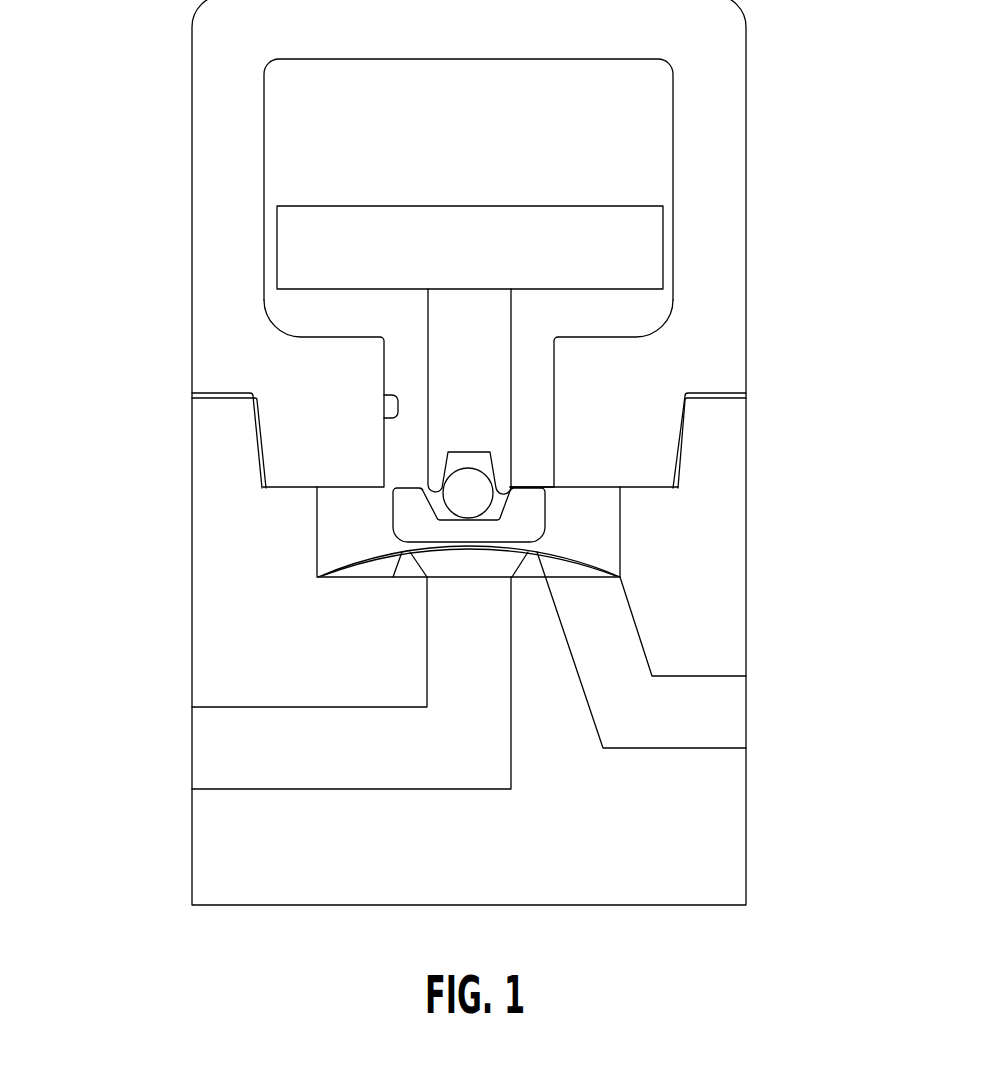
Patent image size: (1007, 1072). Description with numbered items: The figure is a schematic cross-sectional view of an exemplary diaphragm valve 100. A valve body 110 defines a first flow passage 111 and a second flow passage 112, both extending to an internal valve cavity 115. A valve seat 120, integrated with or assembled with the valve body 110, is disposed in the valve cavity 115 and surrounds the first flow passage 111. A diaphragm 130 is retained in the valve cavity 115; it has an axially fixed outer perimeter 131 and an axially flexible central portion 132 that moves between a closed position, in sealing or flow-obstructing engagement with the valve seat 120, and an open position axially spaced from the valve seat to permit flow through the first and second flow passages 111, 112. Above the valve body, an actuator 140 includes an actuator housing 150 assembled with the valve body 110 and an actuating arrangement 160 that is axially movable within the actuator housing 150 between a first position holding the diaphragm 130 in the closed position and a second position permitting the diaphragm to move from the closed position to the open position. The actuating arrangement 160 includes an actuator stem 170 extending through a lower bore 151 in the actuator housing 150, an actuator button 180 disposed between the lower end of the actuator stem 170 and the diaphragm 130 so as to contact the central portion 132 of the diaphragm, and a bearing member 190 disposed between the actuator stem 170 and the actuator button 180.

The diaphragm valve 100 is at (110, 97).
The actuator 140 is at (803, 114).
The actuator housing 150 is at (721, 261).
The lower bore 151 is at (386, 396).
The actuating arrangement 160 is at (540, 352).
The actuator stem 170 is at (495, 410).
The actuator button 180 is at (535, 508).
The bearing member 190 is at (458, 493).
The internal valve cavity 115 is at (328, 516).
The diaphragm 130 is at (583, 555).
The outer perimeter 131 is at (622, 573).
The central portion 132 is at (465, 548).
The valve body 110 is at (725, 587).
The first flow passage 111 is at (222, 789).
The second flow passage 112 is at (703, 748).
The valve seat 120 is at (402, 567).